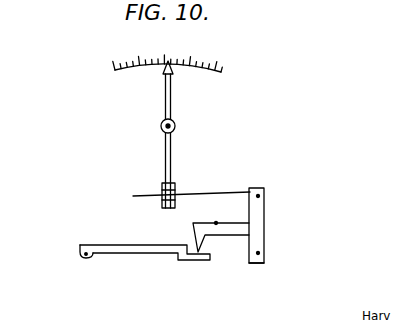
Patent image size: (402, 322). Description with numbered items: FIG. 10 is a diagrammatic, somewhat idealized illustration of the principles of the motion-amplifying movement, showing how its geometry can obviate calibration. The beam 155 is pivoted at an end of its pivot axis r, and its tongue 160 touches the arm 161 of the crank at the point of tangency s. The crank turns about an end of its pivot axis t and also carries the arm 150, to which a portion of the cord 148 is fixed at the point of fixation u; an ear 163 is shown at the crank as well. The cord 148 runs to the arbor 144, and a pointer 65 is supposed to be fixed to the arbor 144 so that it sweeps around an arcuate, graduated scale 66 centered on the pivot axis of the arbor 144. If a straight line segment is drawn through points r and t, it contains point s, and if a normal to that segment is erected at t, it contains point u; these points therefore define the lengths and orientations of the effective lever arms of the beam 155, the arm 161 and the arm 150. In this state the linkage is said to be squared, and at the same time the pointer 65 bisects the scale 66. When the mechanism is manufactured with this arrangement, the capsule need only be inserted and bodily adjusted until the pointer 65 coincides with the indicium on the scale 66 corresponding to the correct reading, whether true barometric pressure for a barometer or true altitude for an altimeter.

The pointer 65 is at (165, 95).
The arcuate scale 66 is at (208, 68).
The arbor 144 is at (162, 188).
The cord 148 is at (222, 194).
The arm of crank 150 is at (257, 225).
The beam 155 is at (128, 257).
The tongue 160 is at (201, 258).
The arm of crank 161 is at (216, 223).
The ear 163 is at (257, 263).
The point of fixation of cord u is at (258, 196).
The end of pivot axis of crank t is at (258, 253).
The point of tangency of tongue and arm s is at (212, 252).
The end of pivot axis of beam r is at (87, 257).